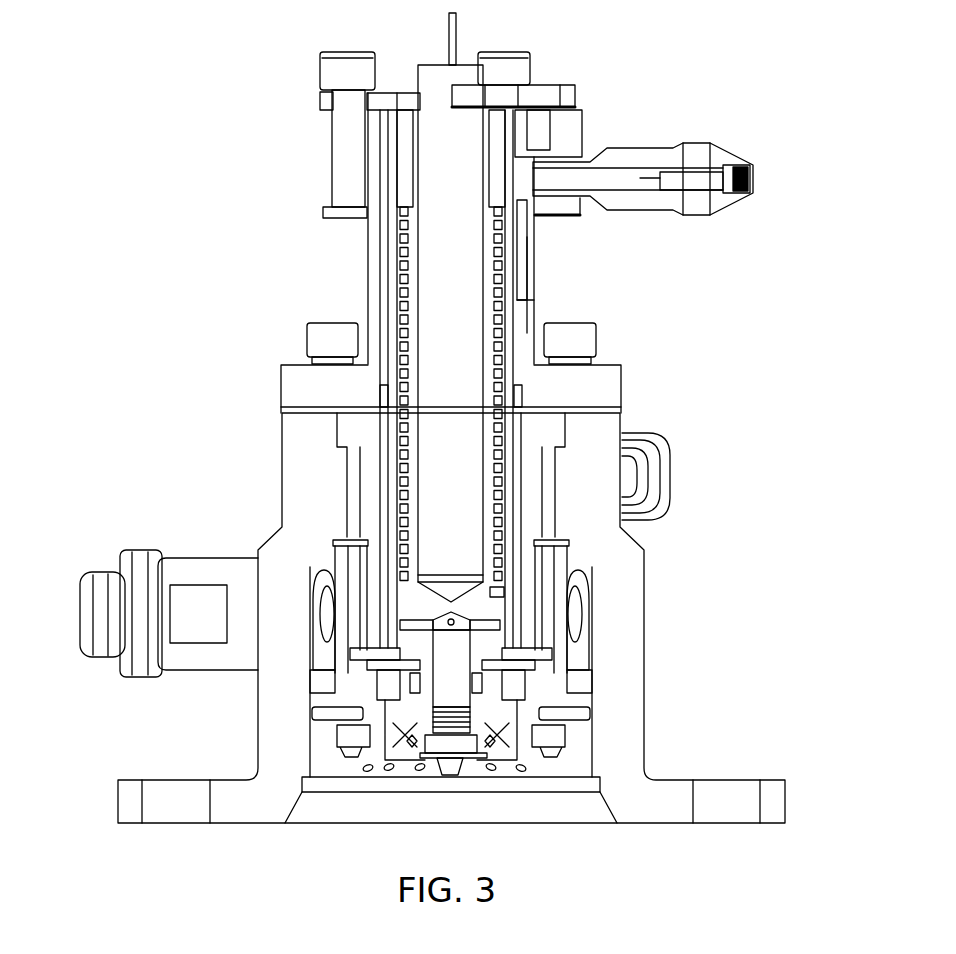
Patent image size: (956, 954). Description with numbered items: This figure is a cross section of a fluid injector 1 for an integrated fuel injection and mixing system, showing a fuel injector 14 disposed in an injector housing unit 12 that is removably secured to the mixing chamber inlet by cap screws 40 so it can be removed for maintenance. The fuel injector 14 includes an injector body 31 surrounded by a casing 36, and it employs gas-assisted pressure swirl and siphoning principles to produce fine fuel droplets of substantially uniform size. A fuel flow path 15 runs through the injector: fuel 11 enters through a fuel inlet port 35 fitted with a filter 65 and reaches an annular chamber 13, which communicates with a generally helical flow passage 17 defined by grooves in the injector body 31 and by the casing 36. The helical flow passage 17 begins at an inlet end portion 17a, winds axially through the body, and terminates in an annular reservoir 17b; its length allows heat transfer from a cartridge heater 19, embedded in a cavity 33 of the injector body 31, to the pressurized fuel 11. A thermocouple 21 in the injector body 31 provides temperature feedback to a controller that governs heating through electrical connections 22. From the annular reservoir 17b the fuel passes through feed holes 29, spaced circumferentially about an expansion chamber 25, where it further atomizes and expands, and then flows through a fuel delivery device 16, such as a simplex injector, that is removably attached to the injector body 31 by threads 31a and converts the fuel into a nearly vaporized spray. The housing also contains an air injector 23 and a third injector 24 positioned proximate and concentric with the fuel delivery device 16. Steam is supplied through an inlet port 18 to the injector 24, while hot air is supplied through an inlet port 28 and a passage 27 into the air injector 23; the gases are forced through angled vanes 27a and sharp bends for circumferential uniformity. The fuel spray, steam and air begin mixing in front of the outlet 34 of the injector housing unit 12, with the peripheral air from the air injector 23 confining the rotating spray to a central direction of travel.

The fluid injector 1 is at (197, 331).
The fuel 11 is at (768, 180).
The injector housing unit 12 is at (623, 672).
The annular chamber 13 is at (547, 157).
The fuel injector 14 is at (510, 593).
The fuel flow path 15 is at (607, 178).
The fuel delivery device 16 is at (448, 760).
The helical flow passage 17 is at (400, 246).
The inlet end portion 17a is at (400, 211).
The annular reservoir 17b is at (397, 625).
The inlet port 18 is at (648, 445).
The cartridge heater 19 is at (454, 176).
The thermocouple 21 is at (418, 605).
The electrical connections 22 is at (455, 13).
The air injector 23 is at (337, 763).
The third injector 24 is at (412, 727).
The expansion chamber 25 is at (452, 663).
The passage 27 is at (327, 610).
The angled vanes 27a is at (325, 697).
The inlet port 28 is at (143, 557).
The feed hole 29 is at (495, 625).
The injector body 31 is at (408, 290).
The threads 31a is at (525, 722).
The cavity 33 is at (456, 585).
The outlet 34 is at (562, 813).
The fuel inlet port 35 is at (693, 207).
The casing 36 is at (518, 213).
The cap screws 40 is at (325, 341).
The filter 65 is at (700, 177).